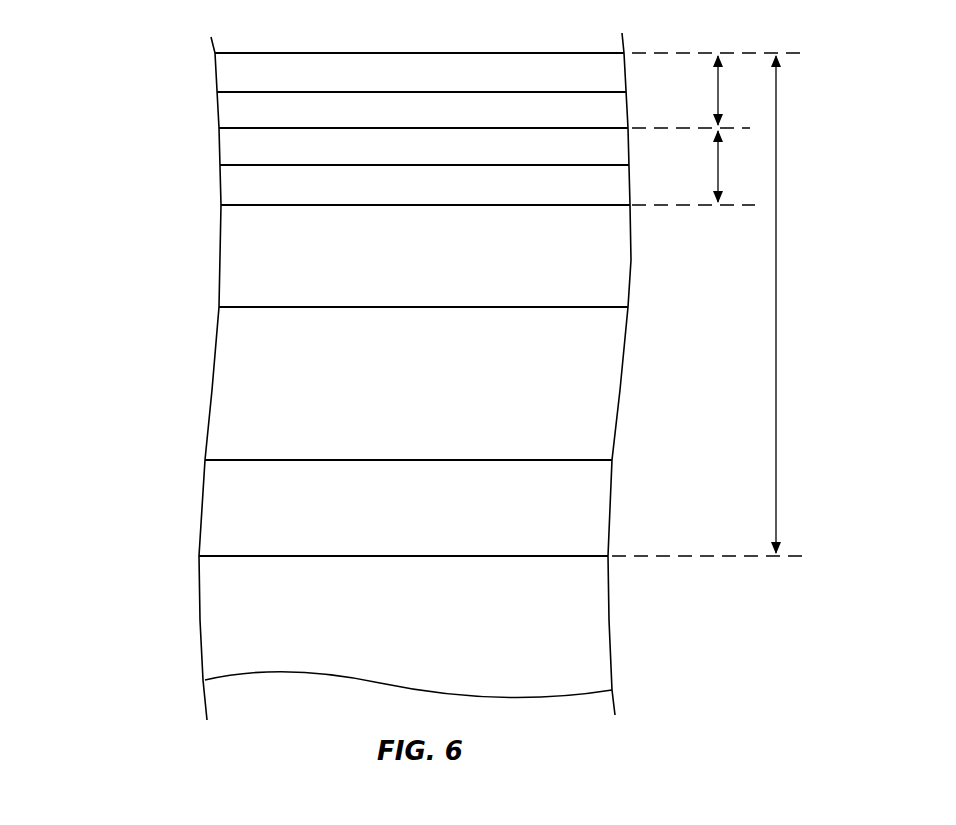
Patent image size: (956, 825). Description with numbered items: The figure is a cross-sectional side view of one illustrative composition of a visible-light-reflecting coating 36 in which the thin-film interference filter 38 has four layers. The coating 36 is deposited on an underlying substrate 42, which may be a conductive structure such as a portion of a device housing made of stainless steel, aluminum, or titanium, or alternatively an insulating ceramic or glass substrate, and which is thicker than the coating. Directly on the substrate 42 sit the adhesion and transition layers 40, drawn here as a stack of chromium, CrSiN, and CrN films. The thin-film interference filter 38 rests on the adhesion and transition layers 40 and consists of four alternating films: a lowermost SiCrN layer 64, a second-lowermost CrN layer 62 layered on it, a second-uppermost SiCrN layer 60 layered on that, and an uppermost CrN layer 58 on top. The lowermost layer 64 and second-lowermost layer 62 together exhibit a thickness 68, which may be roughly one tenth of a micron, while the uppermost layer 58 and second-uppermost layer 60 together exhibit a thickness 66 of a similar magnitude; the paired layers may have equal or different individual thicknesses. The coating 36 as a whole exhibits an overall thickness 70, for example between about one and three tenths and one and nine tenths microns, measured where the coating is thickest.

The coating 36 is at (122, 53).
The thin-film interference filter 38 is at (198, 53).
The adhesion and transition layers 40 is at (195, 205).
The substrate 42 is at (216, 625).
The uppermost layer 58 is at (612, 72).
The second-uppermost layer 60 is at (614, 107).
The second-lowermost layer 62 is at (612, 149).
The lowermost layer 64 is at (618, 187).
The thickness 66 is at (718, 100).
The thickness 68 is at (720, 165).
The overall thickness 70 is at (776, 322).